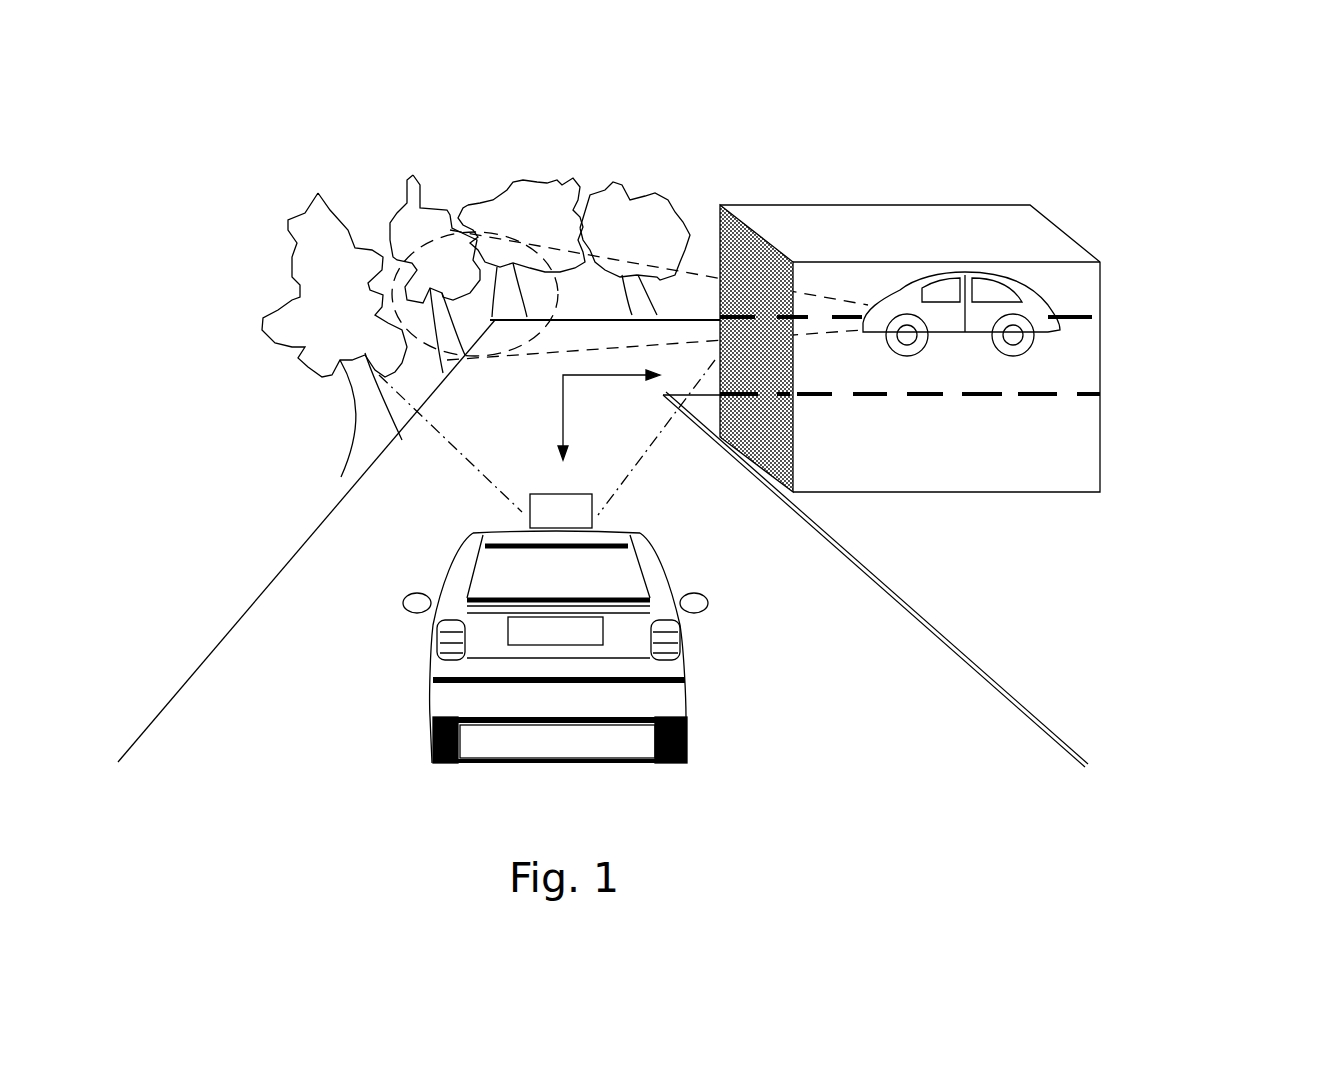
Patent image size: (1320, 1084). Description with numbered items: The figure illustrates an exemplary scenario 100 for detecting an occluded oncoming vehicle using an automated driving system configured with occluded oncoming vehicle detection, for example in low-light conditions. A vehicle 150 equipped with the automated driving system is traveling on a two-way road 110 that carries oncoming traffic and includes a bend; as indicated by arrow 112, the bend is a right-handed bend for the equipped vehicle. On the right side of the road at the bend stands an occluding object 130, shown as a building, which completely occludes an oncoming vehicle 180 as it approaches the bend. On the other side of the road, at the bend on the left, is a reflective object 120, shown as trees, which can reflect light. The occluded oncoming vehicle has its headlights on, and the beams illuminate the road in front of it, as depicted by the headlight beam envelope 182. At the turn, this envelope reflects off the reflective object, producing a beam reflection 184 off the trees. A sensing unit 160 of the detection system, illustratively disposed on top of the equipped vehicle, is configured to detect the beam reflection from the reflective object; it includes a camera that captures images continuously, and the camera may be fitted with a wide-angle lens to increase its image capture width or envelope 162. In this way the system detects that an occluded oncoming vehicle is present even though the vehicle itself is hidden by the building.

The scenario 100 is at (570, 835).
The two-way road 110 is at (793, 578).
The arrow 112 is at (562, 428).
The reflective object 120 is at (292, 283).
The occluding object 130 is at (1103, 352).
The vehicle 150 is at (410, 642).
The sensing unit 160 is at (585, 505).
The image capture envelope 162 is at (470, 433).
The occluded oncoming vehicle 180 is at (1053, 292).
The headlight beam envelope 182 is at (634, 258).
The beam reflection 184 is at (450, 282).